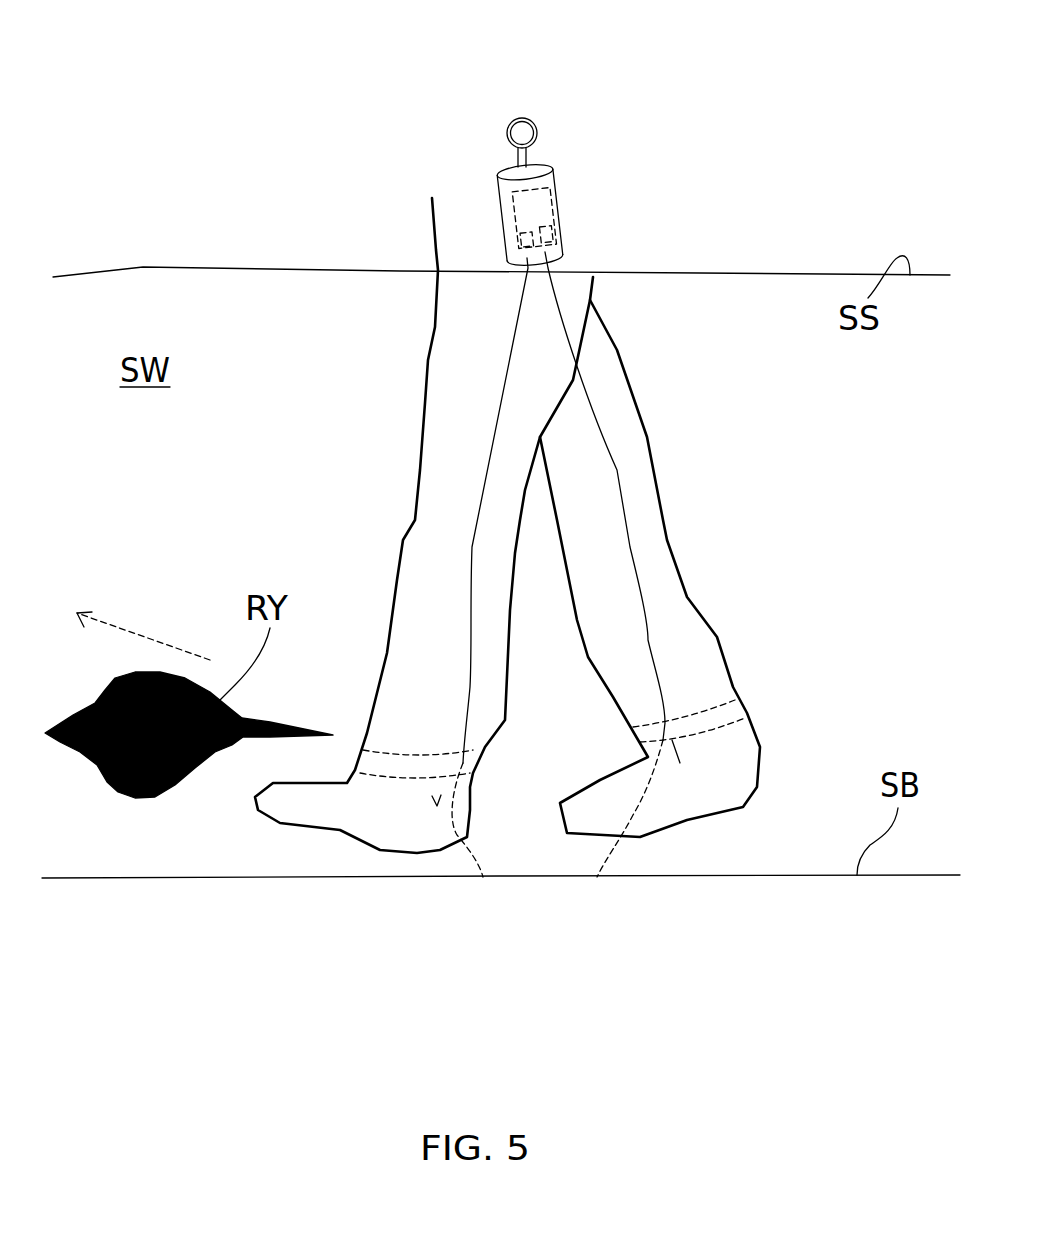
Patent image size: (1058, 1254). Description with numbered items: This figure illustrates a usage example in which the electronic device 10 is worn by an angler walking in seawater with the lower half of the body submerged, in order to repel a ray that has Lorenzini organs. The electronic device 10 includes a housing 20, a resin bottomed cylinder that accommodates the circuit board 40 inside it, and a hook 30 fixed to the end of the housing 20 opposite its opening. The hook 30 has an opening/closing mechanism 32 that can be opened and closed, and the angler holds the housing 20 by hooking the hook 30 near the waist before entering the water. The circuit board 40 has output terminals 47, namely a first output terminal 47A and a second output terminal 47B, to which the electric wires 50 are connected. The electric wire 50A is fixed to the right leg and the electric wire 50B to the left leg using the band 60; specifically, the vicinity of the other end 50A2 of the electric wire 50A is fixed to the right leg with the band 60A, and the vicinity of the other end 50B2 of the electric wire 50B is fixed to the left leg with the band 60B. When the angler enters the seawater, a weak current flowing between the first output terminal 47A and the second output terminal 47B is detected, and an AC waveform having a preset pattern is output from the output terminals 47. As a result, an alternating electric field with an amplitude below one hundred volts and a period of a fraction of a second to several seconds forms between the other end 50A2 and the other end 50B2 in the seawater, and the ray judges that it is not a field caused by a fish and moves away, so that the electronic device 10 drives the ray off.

The electronic device 10 is at (592, 98).
The housing 20 is at (553, 173).
The hook 30 is at (508, 144).
The opening/closing mechanism 32 is at (507, 130).
The circuit board 40 is at (510, 217).
The output terminals 47 is at (330, 157).
The first output terminal 47A is at (507, 217).
The second output terminal 47B is at (503, 240).
The electric wire 50 is at (813, 362).
The electric wire 50A is at (620, 490).
The electric wire 50B is at (503, 400).
The other end of the electric wire 50A2 is at (677, 762).
The other end of the electric wire 50B2 is at (437, 805).
The band 60 is at (433, 1003).
The band 60A is at (597, 877).
The band 60B is at (483, 877).